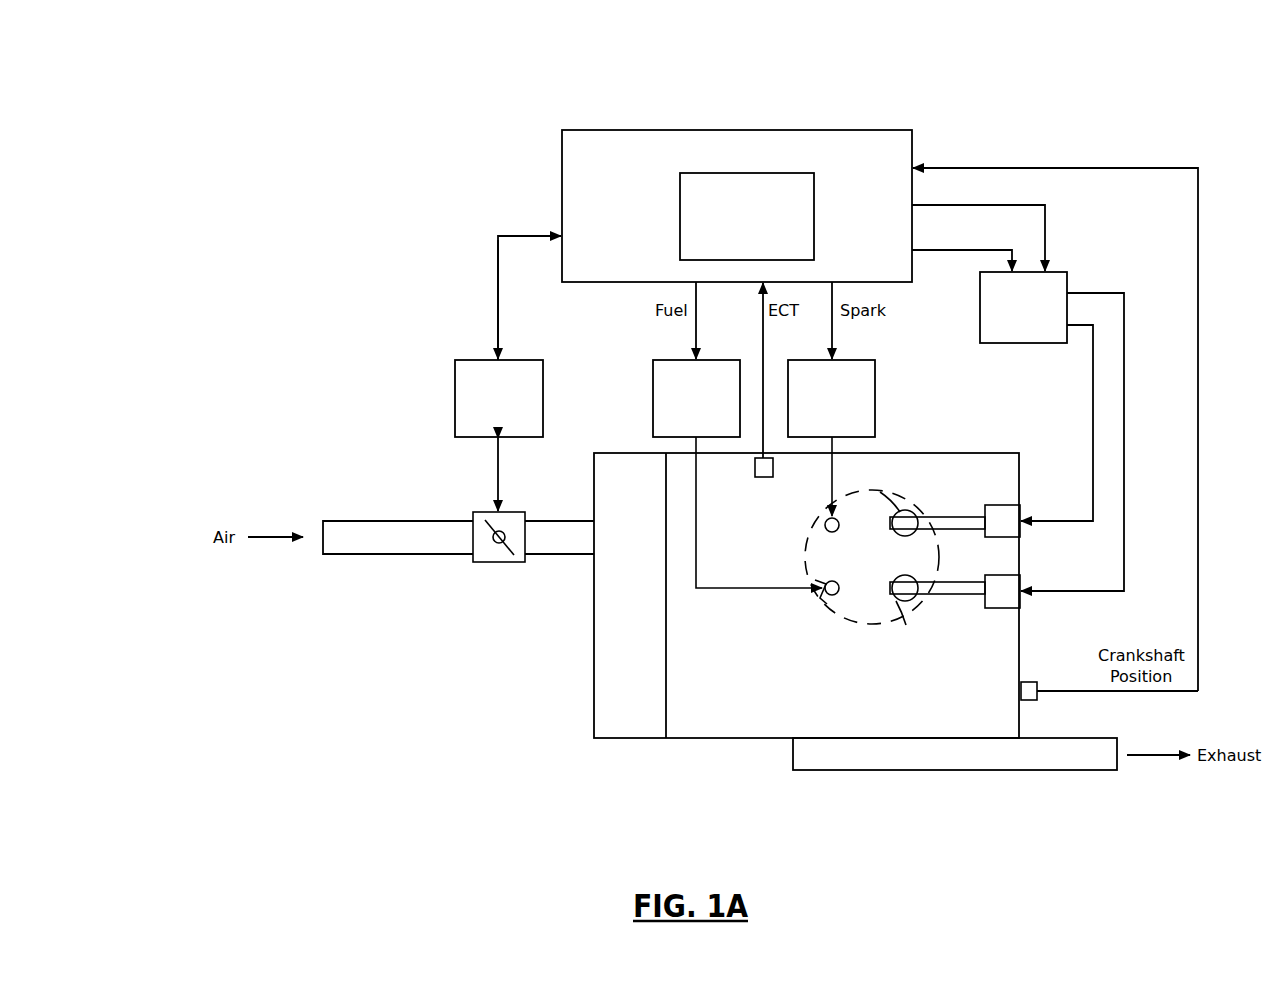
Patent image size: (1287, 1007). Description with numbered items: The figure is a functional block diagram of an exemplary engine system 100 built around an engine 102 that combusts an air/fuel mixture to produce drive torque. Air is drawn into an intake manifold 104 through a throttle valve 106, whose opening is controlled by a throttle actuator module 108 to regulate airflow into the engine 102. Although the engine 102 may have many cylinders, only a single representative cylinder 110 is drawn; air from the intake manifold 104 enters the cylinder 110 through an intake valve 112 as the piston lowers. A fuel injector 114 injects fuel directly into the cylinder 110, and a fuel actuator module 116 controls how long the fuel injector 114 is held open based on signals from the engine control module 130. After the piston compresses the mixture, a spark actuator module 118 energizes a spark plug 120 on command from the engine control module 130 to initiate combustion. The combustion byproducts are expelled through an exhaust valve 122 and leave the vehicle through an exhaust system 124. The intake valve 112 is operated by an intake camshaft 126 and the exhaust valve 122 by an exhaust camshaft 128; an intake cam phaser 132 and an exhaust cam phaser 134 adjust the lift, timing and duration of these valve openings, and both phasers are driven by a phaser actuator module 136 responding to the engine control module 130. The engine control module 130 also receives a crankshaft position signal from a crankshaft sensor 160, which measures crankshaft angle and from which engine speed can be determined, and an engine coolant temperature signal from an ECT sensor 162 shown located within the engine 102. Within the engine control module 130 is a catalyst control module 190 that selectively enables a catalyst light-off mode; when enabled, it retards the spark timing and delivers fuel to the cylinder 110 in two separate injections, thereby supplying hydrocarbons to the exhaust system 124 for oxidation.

The engine system 100 is at (116, 67).
The engine 102 is at (946, 452).
The intake manifold 104 is at (605, 452).
The throttle valve 106 is at (498, 563).
The throttle actuator module 108 is at (512, 359).
The cylinder 110 is at (846, 635).
The intake valve 112 is at (906, 500).
The fuel injector 114 is at (818, 600).
The fuel actuator module 116 is at (668, 359).
The spark actuator module 118 is at (876, 370).
The spark plug 120 is at (826, 517).
The exhaust valve 122 is at (904, 618).
The exhaust system 124 is at (1050, 781).
The intake camshaft 126 is at (964, 517).
The exhaust camshaft 128 is at (964, 596).
The engine control module 130 is at (738, 128).
The intake cam phaser 132 is at (1002, 504).
The exhaust cam phaser 134 is at (1003, 609).
The phaser actuator module 136 is at (1068, 283).
The crankshaft sensor 160 is at (1040, 681).
The ECT sensor 162 is at (755, 478).
The catalyst control module 190 is at (816, 215).